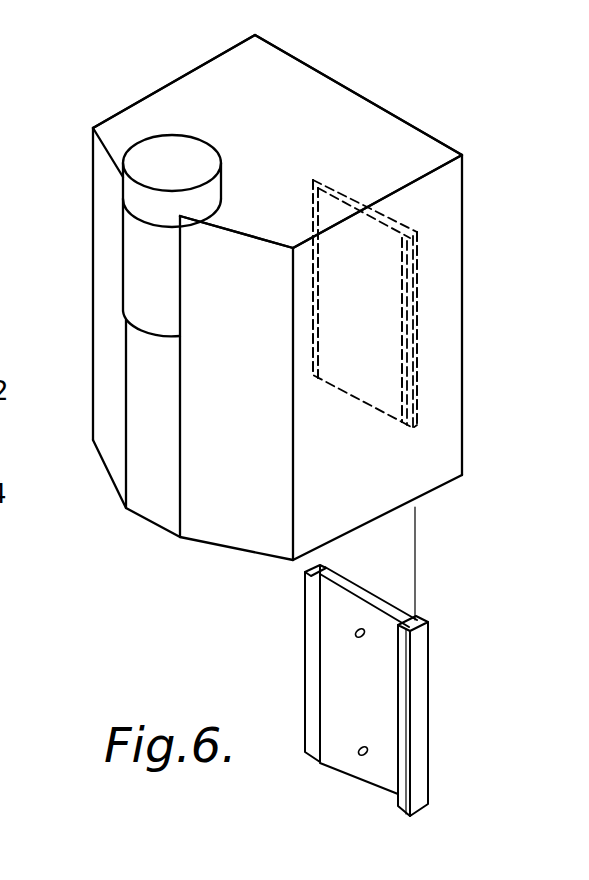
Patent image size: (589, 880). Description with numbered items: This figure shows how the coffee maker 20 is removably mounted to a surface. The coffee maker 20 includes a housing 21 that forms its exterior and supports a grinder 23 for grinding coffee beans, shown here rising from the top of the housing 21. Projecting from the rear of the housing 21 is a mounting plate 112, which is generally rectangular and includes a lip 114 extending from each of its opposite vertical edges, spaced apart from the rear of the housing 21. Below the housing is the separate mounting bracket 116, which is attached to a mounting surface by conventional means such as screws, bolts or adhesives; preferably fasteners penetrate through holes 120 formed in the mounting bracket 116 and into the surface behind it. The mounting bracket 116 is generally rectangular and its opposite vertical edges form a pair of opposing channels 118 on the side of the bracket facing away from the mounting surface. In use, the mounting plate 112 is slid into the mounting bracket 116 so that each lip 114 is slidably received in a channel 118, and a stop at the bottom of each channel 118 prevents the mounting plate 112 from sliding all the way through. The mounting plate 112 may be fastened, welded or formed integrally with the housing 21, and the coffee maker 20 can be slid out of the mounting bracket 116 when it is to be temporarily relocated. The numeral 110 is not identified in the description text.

The coffee maker 20 is at (80, 122).
The housing 21 is at (160, 92).
The grinder 23 is at (128, 230).
The mounting plate 112 is at (398, 213).
The lip 114 is at (320, 177).
The mounting bracket 116 is at (377, 590).
The channel 118 is at (316, 574).
The holes 120 is at (357, 747).
The mounting bracket 110 is at (21, 564).